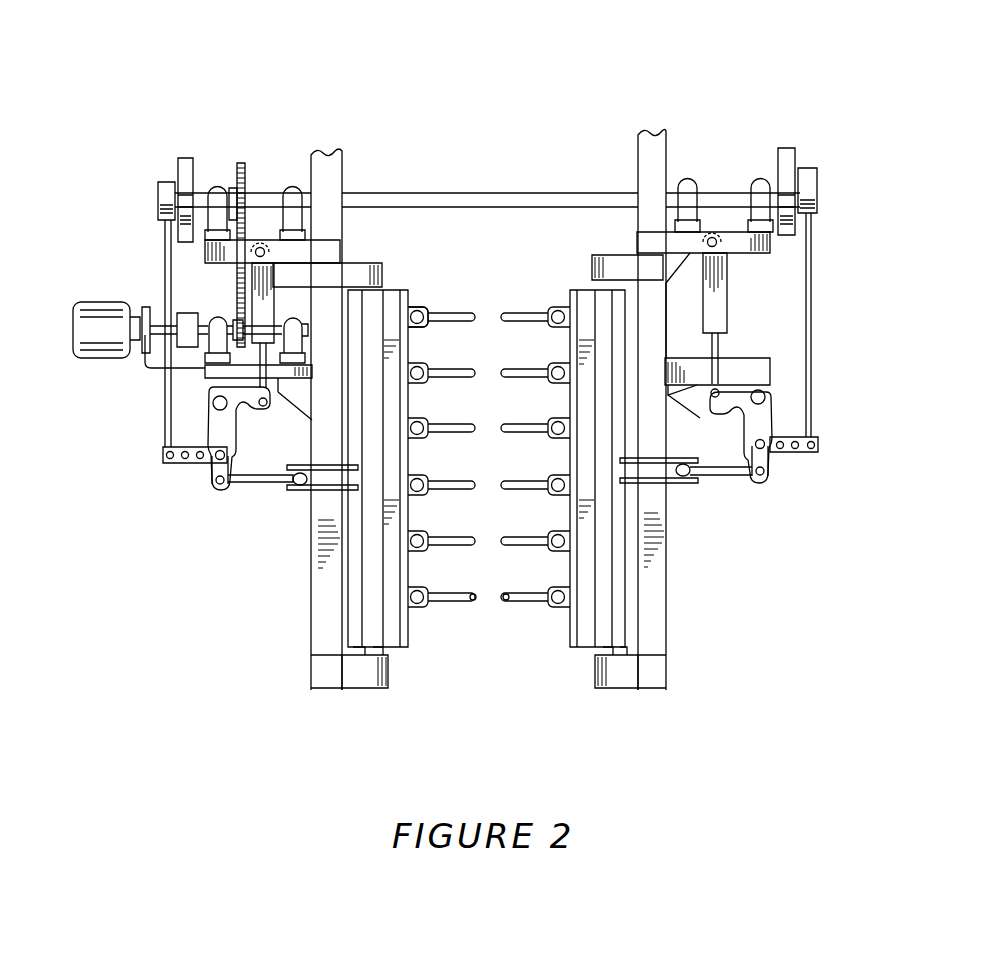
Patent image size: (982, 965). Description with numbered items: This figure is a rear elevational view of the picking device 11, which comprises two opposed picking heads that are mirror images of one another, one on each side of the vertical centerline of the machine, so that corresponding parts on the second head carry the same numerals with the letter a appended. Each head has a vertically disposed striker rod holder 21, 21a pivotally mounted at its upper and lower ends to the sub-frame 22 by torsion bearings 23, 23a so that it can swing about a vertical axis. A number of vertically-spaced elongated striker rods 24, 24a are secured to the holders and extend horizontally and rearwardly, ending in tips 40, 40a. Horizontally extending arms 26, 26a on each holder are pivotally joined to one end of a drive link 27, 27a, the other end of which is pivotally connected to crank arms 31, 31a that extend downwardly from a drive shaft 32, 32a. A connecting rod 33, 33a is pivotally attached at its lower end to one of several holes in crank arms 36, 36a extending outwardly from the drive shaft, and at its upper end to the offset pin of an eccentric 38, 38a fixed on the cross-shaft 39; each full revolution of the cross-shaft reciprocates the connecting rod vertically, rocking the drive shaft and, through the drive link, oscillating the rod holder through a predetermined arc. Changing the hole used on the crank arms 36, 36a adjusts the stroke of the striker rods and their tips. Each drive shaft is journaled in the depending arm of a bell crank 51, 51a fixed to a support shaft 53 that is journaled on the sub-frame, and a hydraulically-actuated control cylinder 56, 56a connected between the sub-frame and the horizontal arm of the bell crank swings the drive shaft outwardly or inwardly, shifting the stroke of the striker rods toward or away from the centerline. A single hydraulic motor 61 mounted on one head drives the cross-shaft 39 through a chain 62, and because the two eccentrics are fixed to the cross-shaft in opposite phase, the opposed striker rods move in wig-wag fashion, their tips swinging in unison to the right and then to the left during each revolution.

The picking device 11 is at (660, 62).
The striker rod holder 21 is at (585, 628).
The striker rod holder 21a is at (395, 630).
The sub-frame 22 is at (655, 588).
The torsion bearings 23 is at (597, 266).
The torsion bearings 23a is at (365, 272).
The striker rods 24 is at (616, 486).
The striker rods 24a is at (447, 432).
The arms 26 is at (684, 484).
The arms 26a is at (302, 491).
The drive link 27 is at (717, 478).
The drive link 27a is at (250, 483).
The crank arms 31 is at (755, 475).
The crank arms 31a is at (213, 478).
The drive shaft 32 is at (764, 449).
The drive shaft 32a is at (226, 456).
The connecting rod 33 is at (806, 313).
The connecting rod 33a is at (165, 420).
The crank arms 36 is at (805, 455).
The crank arms 36a is at (172, 464).
The eccentric 38 is at (788, 182).
The eccentric 38a is at (183, 175).
The cross-shaft 39 is at (450, 197).
The tips 40 is at (506, 596).
The tips 40a is at (475, 596).
The bell crank 51 is at (760, 408).
The bell crank 51a is at (238, 422).
The support shaft 53 is at (762, 384).
The control cylinder 56 is at (733, 297).
The control cylinder 56a is at (262, 302).
The hydraulic motor 61 is at (103, 322).
The chain 62 is at (246, 185).